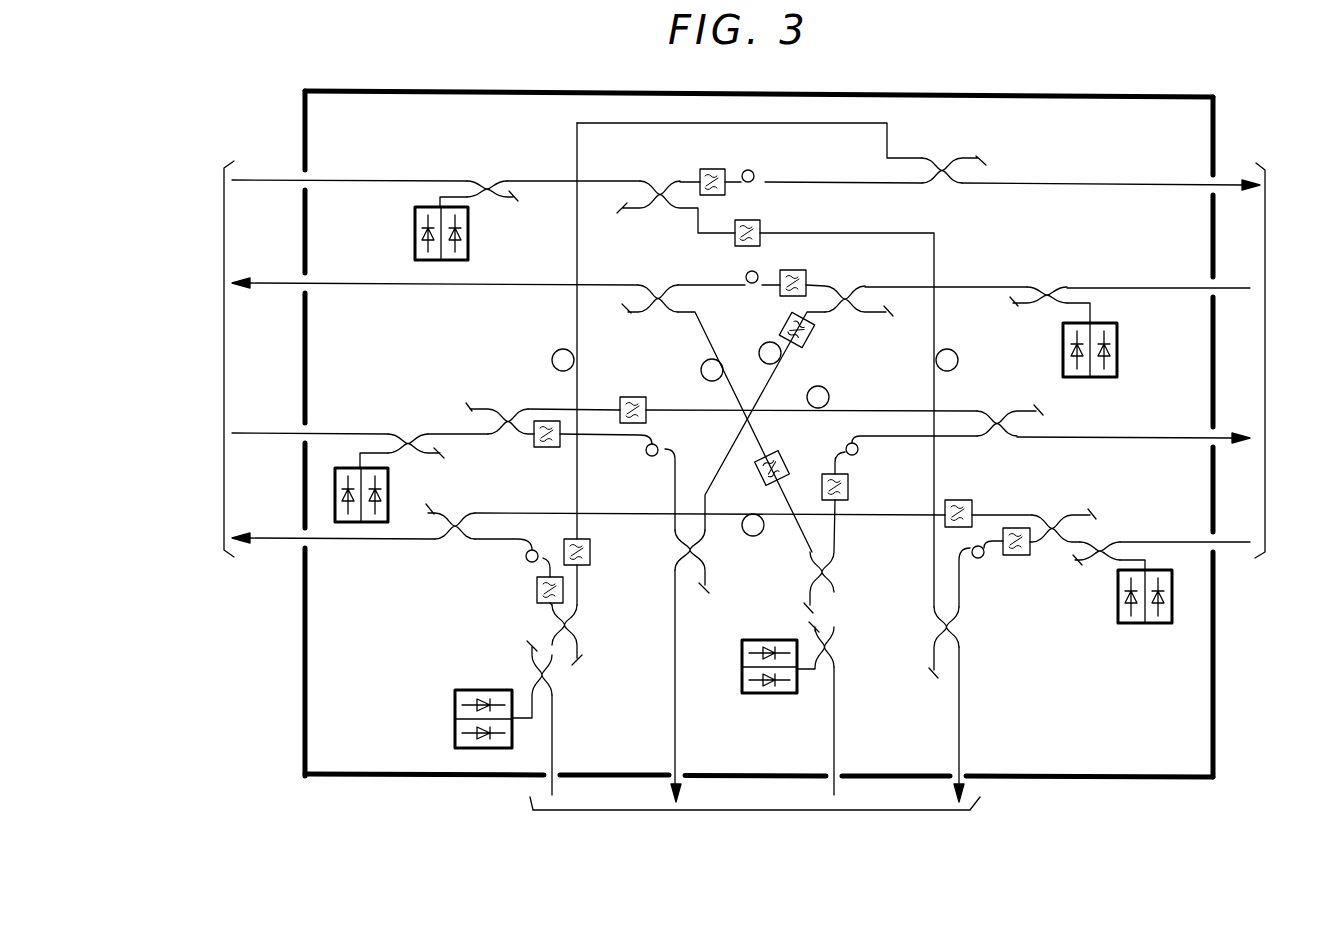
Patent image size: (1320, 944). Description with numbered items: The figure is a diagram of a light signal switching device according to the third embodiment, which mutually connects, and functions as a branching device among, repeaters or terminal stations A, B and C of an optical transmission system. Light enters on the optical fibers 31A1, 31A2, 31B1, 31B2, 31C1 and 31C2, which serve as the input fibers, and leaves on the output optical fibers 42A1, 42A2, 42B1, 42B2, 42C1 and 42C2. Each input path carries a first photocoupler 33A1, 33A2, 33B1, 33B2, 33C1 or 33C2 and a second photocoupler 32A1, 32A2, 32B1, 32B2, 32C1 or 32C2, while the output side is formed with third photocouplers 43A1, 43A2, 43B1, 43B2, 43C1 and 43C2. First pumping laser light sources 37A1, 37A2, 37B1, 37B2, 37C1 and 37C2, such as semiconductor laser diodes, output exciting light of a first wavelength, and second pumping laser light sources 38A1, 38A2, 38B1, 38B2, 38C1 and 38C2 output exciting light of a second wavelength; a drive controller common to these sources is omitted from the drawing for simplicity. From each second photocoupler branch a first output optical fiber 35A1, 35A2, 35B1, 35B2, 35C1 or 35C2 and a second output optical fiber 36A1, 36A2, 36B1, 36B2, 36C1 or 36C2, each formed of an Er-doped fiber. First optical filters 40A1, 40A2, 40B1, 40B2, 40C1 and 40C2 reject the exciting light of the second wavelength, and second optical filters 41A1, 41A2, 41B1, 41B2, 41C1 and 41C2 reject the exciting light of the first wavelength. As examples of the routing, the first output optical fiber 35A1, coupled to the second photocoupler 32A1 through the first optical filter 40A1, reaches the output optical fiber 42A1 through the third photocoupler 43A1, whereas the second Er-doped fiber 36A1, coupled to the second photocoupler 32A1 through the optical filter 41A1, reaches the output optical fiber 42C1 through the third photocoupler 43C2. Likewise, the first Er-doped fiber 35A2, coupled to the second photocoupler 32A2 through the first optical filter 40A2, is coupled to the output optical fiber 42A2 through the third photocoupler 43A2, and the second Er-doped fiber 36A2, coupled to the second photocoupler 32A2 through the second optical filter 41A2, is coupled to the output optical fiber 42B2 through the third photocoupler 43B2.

The input optical fiber 31A1 is at (436, 166).
The input optical fiber 31A2 is at (306, 432).
The input optical fiber 31B1 is at (585, 745).
The input optical fiber 31B2 is at (866, 731).
The input optical fiber 31C1 is at (1128, 286).
The input optical fiber 31C2 is at (1140, 540).
The second photocoupler 32A1 is at (656, 183).
The second photocoupler 32A2 is at (507, 409).
The second photocoupler 32B1 is at (580, 628).
The second photocoupler 32B2 is at (827, 573).
The second photocoupler 32C1 is at (843, 284).
The second photocoupler 32C2 is at (1053, 514).
The first photocoupler 33A1 is at (490, 172).
The first photocoupler 33A2 is at (410, 432).
The first photocoupler 33B1 is at (538, 670).
The first photocoupler 33B2 is at (828, 652).
The first photocoupler 33C1 is at (1047, 286).
The first photocoupler 33C2 is at (1097, 562).
The first output optical fiber 35A1 is at (843, 167).
The first output optical fiber 35A2 is at (678, 457).
The first output optical fiber 35B1 is at (497, 540).
The first output optical fiber 35B2 is at (960, 436).
The first output optical fiber 35C1 is at (703, 283).
The first output optical fiber 35C2 is at (960, 575).
The second output optical fiber 36A1 is at (838, 233).
The second output optical fiber 36A2 is at (862, 409).
The second output optical fiber 36B1 is at (577, 314).
The second output optical fiber 36B2 is at (711, 347).
The second output optical fiber 36C1 is at (773, 341).
The second output optical fiber 36C2 is at (868, 516).
The first pumping laser light source 37A1 is at (415, 237).
The first pumping laser light source 37A2 is at (335, 496).
The first pumping laser light source 37B1 is at (455, 705).
The first pumping laser light source 37B2 is at (740, 652).
The first pumping laser light source 37C1 is at (1118, 346).
The first pumping laser light source 37C2 is at (1158, 624).
The second pumping laser light source 38A1 is at (468, 240).
The second pumping laser light source 38A2 is at (390, 499).
The second pumping laser light source 38B1 is at (455, 738).
The second pumping laser light source 38B2 is at (770, 694).
The second pumping laser light source 38C1 is at (1063, 347).
The second pumping laser light source 38C2 is at (1128, 625).
The first optical filter 40A1 is at (712, 169).
The first optical filter 40A2 is at (540, 446).
The first optical filter 40B1 is at (537, 595).
The first optical filter 40B2 is at (849, 489).
The first optical filter 40C1 is at (792, 270).
The first optical filter 40C2 is at (1017, 556).
The second optical filter 41A1 is at (738, 222).
The second optical filter 41A2 is at (632, 397).
The second optical filter 41B1 is at (592, 554).
The second optical filter 41B2 is at (793, 443).
The second optical filter 41C1 is at (813, 334).
The second optical filter 41C2 is at (990, 503).
The output optical fiber 42A1 is at (1111, 174).
The output optical fiber 42A2 is at (678, 754).
The output optical fiber 42B1 is at (333, 550).
The output optical fiber 42B2 is at (1133, 426).
The output optical fiber 42C1 is at (435, 296).
The output optical fiber 42C2 is at (990, 724).
The third photocoupler 43A1 is at (948, 153).
The third photocoupler 43A2 is at (696, 551).
The third photocoupler 43B1 is at (452, 545).
The third photocoupler 43B2 is at (998, 410).
The third photocoupler 43C1 is at (655, 284).
The third photocoupler 43C2 is at (955, 640).
The repeater or terminal station A is at (212, 359).
The repeater or terminal station B is at (755, 820).
The repeater or terminal station C is at (1272, 360).